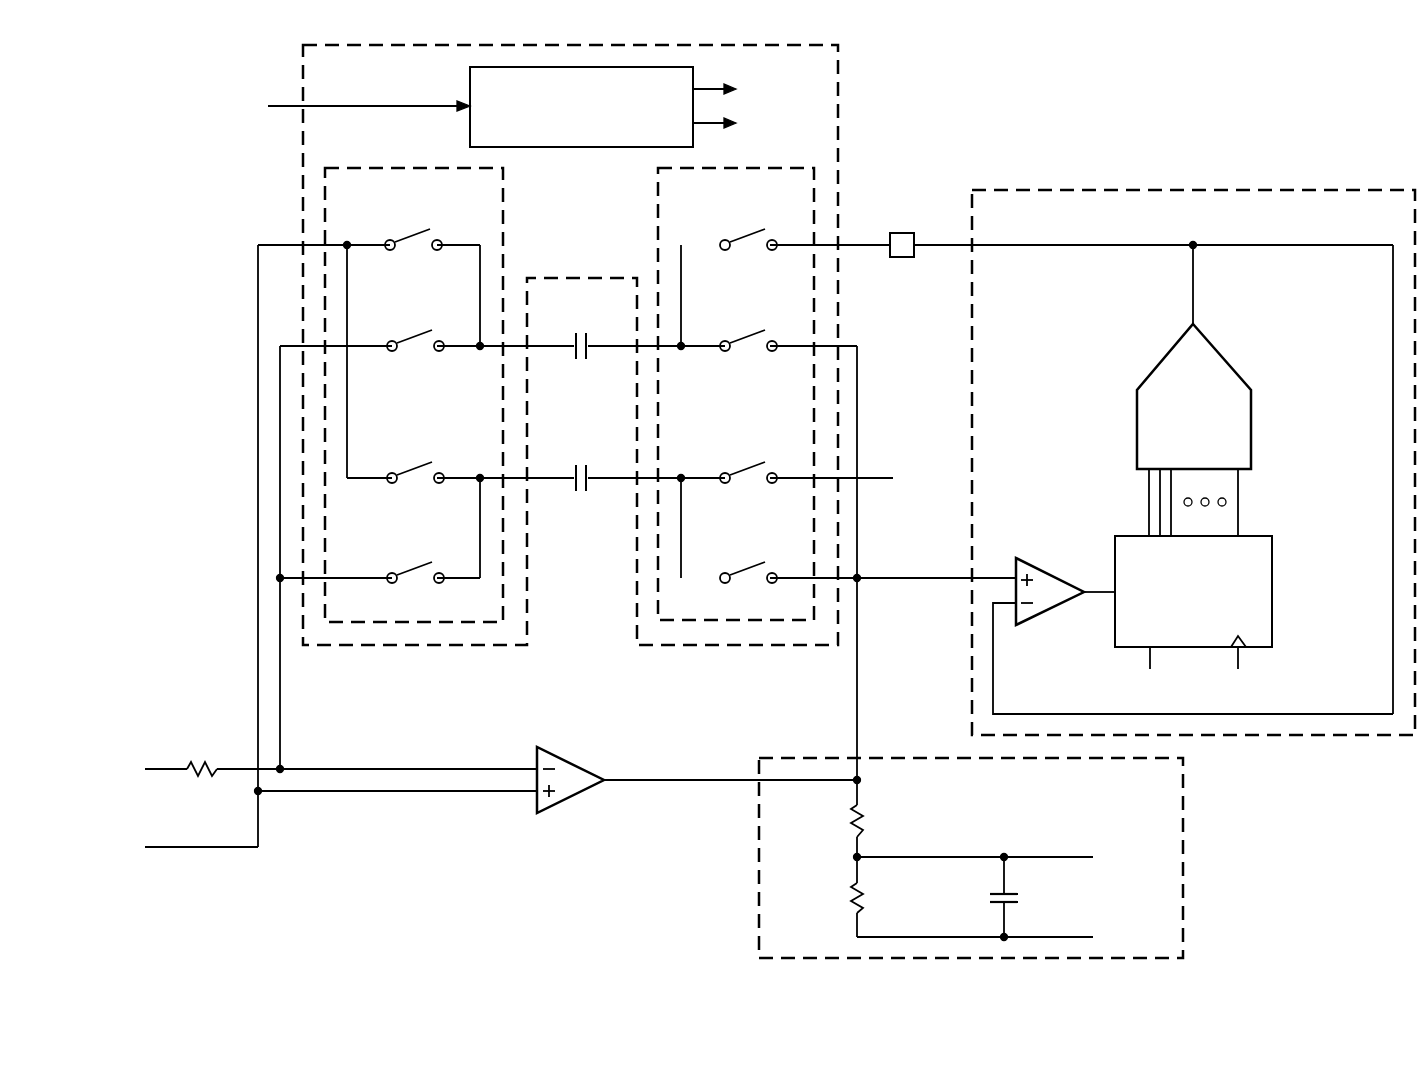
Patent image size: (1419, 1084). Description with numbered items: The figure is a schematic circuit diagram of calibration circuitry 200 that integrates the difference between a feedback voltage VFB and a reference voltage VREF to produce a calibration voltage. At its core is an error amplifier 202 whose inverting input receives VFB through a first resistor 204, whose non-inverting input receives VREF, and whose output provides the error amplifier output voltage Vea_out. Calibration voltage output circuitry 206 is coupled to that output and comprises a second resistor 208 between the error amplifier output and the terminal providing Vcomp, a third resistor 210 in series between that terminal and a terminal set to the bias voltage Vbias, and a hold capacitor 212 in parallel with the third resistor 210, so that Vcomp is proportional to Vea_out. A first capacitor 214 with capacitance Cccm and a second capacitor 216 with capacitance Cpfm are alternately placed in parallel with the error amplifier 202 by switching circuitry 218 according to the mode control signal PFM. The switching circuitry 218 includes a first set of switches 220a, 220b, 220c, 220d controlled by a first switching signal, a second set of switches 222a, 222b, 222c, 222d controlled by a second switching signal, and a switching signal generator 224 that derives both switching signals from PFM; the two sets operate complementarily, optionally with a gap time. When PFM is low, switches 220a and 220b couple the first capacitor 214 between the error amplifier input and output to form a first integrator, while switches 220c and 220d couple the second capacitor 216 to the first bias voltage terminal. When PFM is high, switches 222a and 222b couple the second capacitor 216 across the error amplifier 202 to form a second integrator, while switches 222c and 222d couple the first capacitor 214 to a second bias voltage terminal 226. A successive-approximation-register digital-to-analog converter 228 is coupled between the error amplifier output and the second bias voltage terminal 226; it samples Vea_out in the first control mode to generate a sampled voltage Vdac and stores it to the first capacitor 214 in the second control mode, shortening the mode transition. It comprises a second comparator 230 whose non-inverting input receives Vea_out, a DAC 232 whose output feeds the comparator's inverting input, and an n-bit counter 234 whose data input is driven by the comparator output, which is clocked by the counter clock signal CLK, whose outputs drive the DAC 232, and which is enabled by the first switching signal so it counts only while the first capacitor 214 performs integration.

The calibration circuitry 200 is at (1320, 96).
The error amplifier 202 is at (577, 800).
The first resistor 204 is at (201, 762).
The calibration voltage output circuitry 206 is at (1192, 877).
The second resistor 208 is at (853, 822).
The third resistor 210 is at (853, 898).
The hold capacitor 212 is at (993, 900).
The first capacitor 214 is at (580, 360).
The second capacitor 216 is at (580, 492).
The switching circuitry 218 is at (294, 209).
The switch of first set 220a is at (414, 334).
The switch of first set 220b is at (747, 334).
The switch of first set 220c is at (414, 466).
The switch of first set 220d is at (747, 466).
The switch of second set 222a is at (414, 566).
The switch of second set 222b is at (747, 566).
The switch of second set 222c is at (414, 233).
The switch of second set 222d is at (747, 233).
The switching signal generator 224 is at (580, 148).
The second bias voltage terminal 226 is at (903, 232).
The successive-approximation-register digital-to-analog converter 228 is at (1224, 182).
The second comparator 230 is at (1051, 574).
The DAC 232 is at (1251, 412).
The n-bit counter 234 is at (1272, 602).